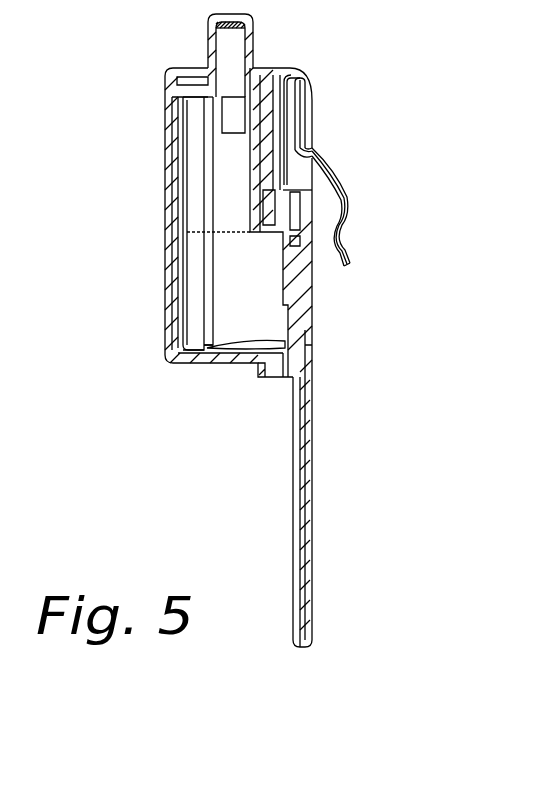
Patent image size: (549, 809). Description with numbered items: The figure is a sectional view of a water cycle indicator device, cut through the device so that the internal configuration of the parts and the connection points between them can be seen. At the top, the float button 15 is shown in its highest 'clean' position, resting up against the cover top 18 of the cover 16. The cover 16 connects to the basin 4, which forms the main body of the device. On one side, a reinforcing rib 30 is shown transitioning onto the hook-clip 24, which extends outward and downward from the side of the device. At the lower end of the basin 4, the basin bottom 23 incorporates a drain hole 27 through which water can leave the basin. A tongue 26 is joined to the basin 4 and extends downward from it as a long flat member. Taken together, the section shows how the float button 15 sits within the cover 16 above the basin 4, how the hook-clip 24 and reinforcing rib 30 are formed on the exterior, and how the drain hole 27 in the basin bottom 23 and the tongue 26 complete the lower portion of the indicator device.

The basin 4 is at (165, 300).
The float button 15 is at (253, 33).
The cover 16 is at (170, 155).
The cover top 18 is at (183, 68).
The basin bottom 23 is at (202, 360).
The hook-clip 24 is at (350, 202).
The tongue 26 is at (312, 473).
The drain hole 27 is at (228, 355).
The reinforcing rib 30 is at (313, 150).